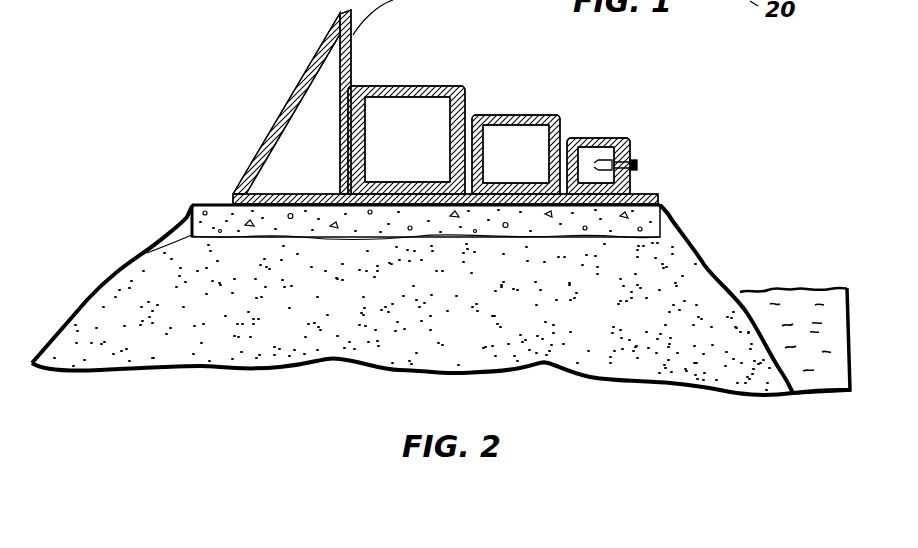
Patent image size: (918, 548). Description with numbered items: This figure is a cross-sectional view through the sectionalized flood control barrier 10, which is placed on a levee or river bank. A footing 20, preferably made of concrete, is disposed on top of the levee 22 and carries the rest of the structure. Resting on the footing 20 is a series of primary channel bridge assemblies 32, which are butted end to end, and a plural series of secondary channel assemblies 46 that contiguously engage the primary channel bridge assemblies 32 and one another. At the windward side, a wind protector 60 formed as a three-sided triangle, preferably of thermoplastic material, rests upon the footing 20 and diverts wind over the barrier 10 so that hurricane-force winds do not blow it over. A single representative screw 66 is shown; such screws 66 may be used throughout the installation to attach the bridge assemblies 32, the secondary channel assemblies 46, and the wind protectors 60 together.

The sectionalized flood control barrier 10 is at (267, 113).
The footing 20 is at (147, 254).
The levee 22 is at (253, 368).
The primary channel bridge assembly 32 is at (592, 138).
The secondary channel assembly 46 is at (410, 88).
The wind protector 60 is at (253, 187).
The screw 66 is at (637, 165).